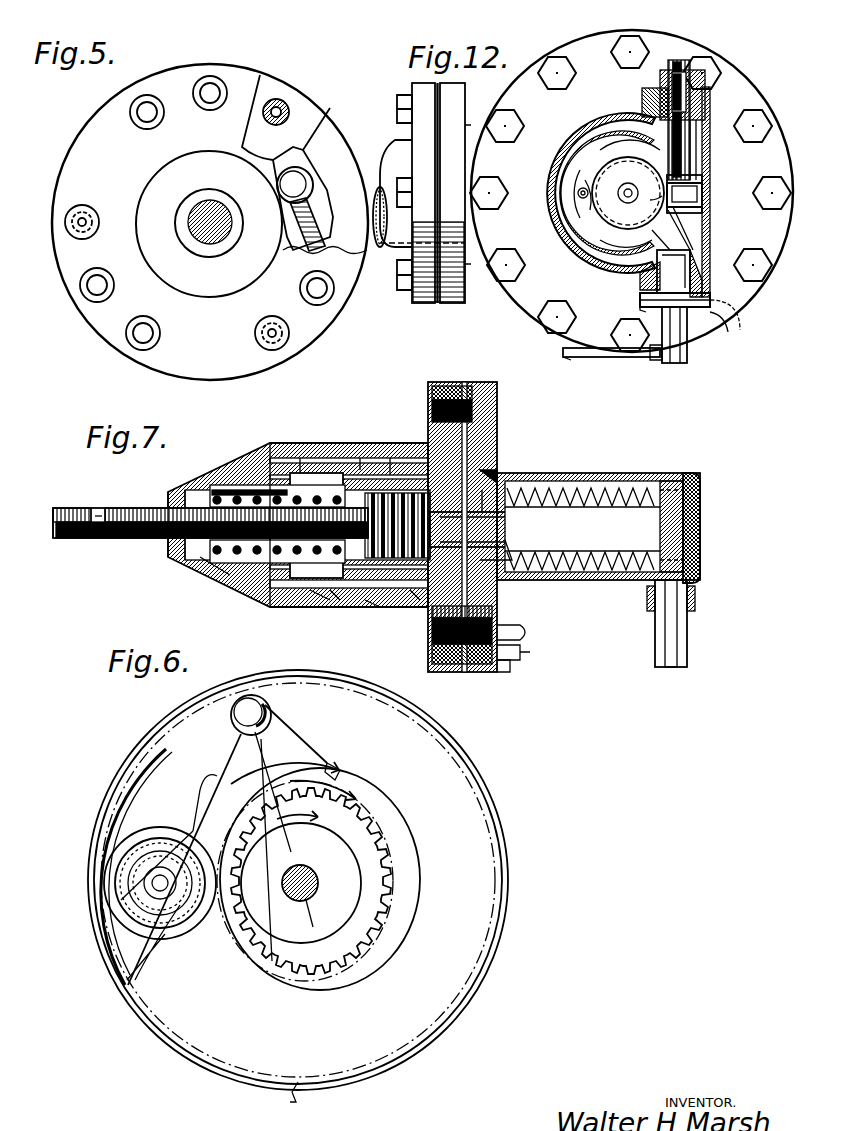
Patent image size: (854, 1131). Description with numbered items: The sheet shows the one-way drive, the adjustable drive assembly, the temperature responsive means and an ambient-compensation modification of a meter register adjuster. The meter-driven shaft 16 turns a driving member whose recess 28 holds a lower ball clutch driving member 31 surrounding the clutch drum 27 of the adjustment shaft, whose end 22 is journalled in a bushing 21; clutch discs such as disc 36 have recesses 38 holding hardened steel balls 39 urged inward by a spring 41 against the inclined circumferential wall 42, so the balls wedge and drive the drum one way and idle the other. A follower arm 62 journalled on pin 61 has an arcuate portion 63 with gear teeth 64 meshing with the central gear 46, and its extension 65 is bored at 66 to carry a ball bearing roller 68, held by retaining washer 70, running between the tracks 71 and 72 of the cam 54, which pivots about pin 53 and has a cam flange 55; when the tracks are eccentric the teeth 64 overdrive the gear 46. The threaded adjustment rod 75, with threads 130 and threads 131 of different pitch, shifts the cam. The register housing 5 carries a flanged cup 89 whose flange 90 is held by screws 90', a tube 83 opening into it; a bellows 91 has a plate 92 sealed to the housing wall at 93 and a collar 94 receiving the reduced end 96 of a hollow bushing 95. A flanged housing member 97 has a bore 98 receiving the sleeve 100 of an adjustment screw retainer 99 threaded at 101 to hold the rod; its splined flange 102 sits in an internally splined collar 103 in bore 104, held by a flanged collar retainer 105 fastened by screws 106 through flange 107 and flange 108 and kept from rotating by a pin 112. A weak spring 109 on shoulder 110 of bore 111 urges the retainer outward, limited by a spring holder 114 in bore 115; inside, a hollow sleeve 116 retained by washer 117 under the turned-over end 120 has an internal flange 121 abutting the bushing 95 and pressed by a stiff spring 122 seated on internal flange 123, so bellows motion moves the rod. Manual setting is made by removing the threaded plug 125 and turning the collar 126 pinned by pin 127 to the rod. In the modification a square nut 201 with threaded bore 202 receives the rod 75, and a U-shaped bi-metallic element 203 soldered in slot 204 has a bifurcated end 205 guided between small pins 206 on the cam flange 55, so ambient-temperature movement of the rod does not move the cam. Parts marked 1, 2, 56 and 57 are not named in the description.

In FIG. 12, the flange body 1 is at (778, 132).
In FIG. 12, the housing boss 2 is at (392, 252).
In FIG. 12, the register housing 5 is at (614, 128).
In FIG. 12, the shaft 16 is at (584, 140).
In FIG. 6, the bushing 21 is at (475, 806).
In FIG. 5, the adjustment shaft end 22 is at (205, 238).
In FIG. 6, the adjustment shaft end 22 is at (302, 867).
In FIG. 5, the clutch drum 27 is at (150, 204).
In FIG. 6, the recess 28 is at (394, 888).
In FIG. 5, the lower ball clutch driving member 31 is at (343, 278).
In FIG. 5, the clutch disc 36 is at (348, 170).
In FIG. 5, the recesses 38 is at (322, 208).
In FIG. 5, the hardened steel balls 39 is at (308, 178).
In FIG. 5, the spring 41 is at (326, 238).
In FIG. 5, the circumferential wall 42 is at (320, 124).
In FIG. 6, the gear 46 is at (385, 924).
In FIG. 12, the pin 53 is at (578, 192).
In FIG. 12, the cam 54 is at (595, 170).
In FIG. 12, the cam flange 55 is at (680, 162).
In FIG. 12, the cam circle 56 is at (626, 184).
In FIG. 12, the cam lobe 57 is at (572, 208).
In FIG. 6, the pin 61 is at (252, 695).
In FIG. 6, the follower arm 62 is at (172, 746).
In FIG. 6, the arcuate portion 63 is at (300, 740).
In FIG. 6, the gear teeth 64 is at (341, 756).
In FIG. 6, the extension 65 is at (134, 806).
In FIG. 6, the bore 66 is at (118, 886).
In FIG. 6, the ball bearing roller 68 is at (164, 944).
In FIG. 6, the retaining washer 70 is at (128, 898).
In FIG. 12, the track 71 is at (640, 182).
In FIG. 12, the track 72 is at (565, 238).
In FIG. 6, the track 72 is at (395, 846).
In FIG. 12, the threaded adjustment rod 75 is at (706, 140).
In FIG. 7, the threaded adjustment rod 75 is at (152, 540).
In FIG. 12, the tube 83 is at (572, 358).
In FIG. 7, the tube 83 is at (688, 626).
In FIG. 12, the flanged cup 89 is at (678, 352).
In FIG. 7, the flanged cup 89 is at (554, 478).
In FIG. 12, the flange 90 is at (701, 330).
In FIG. 7, the flange 90 is at (521, 672).
In FIG. 12, the screws 90' is at (625, 309).
In FIG. 7, the screws 90' is at (530, 642).
In FIG. 7, the bellows 91 is at (612, 481).
In FIG. 7, the plate 92 is at (498, 468).
In FIG. 7, the housing wall attachment 93 is at (494, 578).
In FIG. 7, the collar 94 is at (685, 473).
In FIG. 7, the hollow bushing 95 is at (590, 580).
In FIG. 7, the reduced end 96 is at (700, 522).
In FIG. 12, the flanged housing member 97 is at (704, 272).
In FIG. 7, the flanged housing member 97 is at (388, 455).
In FIG. 7, the bore 98 is at (184, 488).
In FIG. 7, the adjustment screw retainer 99 is at (338, 445).
In FIG. 7, the sleeve 100 is at (268, 455).
In FIG. 7, the threaded end 101 is at (316, 490).
In FIG. 7, the flange 102 is at (364, 440).
In FIG. 7, the internally splined collar 103 is at (304, 458).
In FIG. 7, the bore 104 is at (398, 432).
In FIG. 7, the flanged collar retainer 105 is at (432, 388).
In FIG. 7, the screws 106 is at (498, 388).
In FIG. 12, the flange 107 is at (745, 306).
In FIG. 7, the flange 107 is at (432, 658).
In FIG. 12, the flange 108 is at (730, 320).
In FIG. 7, the flange 108 is at (452, 668).
In FIG. 7, the weak spring 109 is at (215, 572).
In FIG. 7, the shoulder 110 is at (190, 556).
In FIG. 7, the bore 111 is at (236, 598).
In FIG. 7, the pin 112 is at (392, 612).
In FIG. 7, the spring holder 114 is at (342, 610).
In FIG. 7, the bore 115 is at (382, 608).
In FIG. 7, the hollow sleeve 116 is at (500, 430).
In FIG. 7, the retaining washer 117 is at (490, 494).
In FIG. 7, the turned-over end 120 is at (420, 612).
In FIG. 7, the internal flange 121 is at (512, 525).
In FIG. 7, the stiff spring 122 is at (335, 606).
In FIG. 7, the internal flange 123 is at (316, 565).
In FIG. 12, the threaded plug 125 is at (680, 64).
In FIG. 12, the collar 126 is at (706, 96).
In FIG. 12, the pin 127 is at (655, 88).
In FIG. 12, the threads 130 is at (698, 126).
In FIG. 7, the threads 130 is at (70, 538).
In FIG. 12, the threads 131 is at (642, 282).
In FIG. 7, the threads 131 is at (134, 509).
In FIG. 12, the square nut 201 is at (704, 186).
In FIG. 12, the threaded bore 202 is at (700, 198).
In FIG. 12, the bi-metallic element 203 is at (704, 212).
In FIG. 12, the slot 204 is at (704, 170).
In FIG. 12, the bifurcated end 205 is at (650, 230).
In FIG. 12, the small pins 206 is at (658, 210).